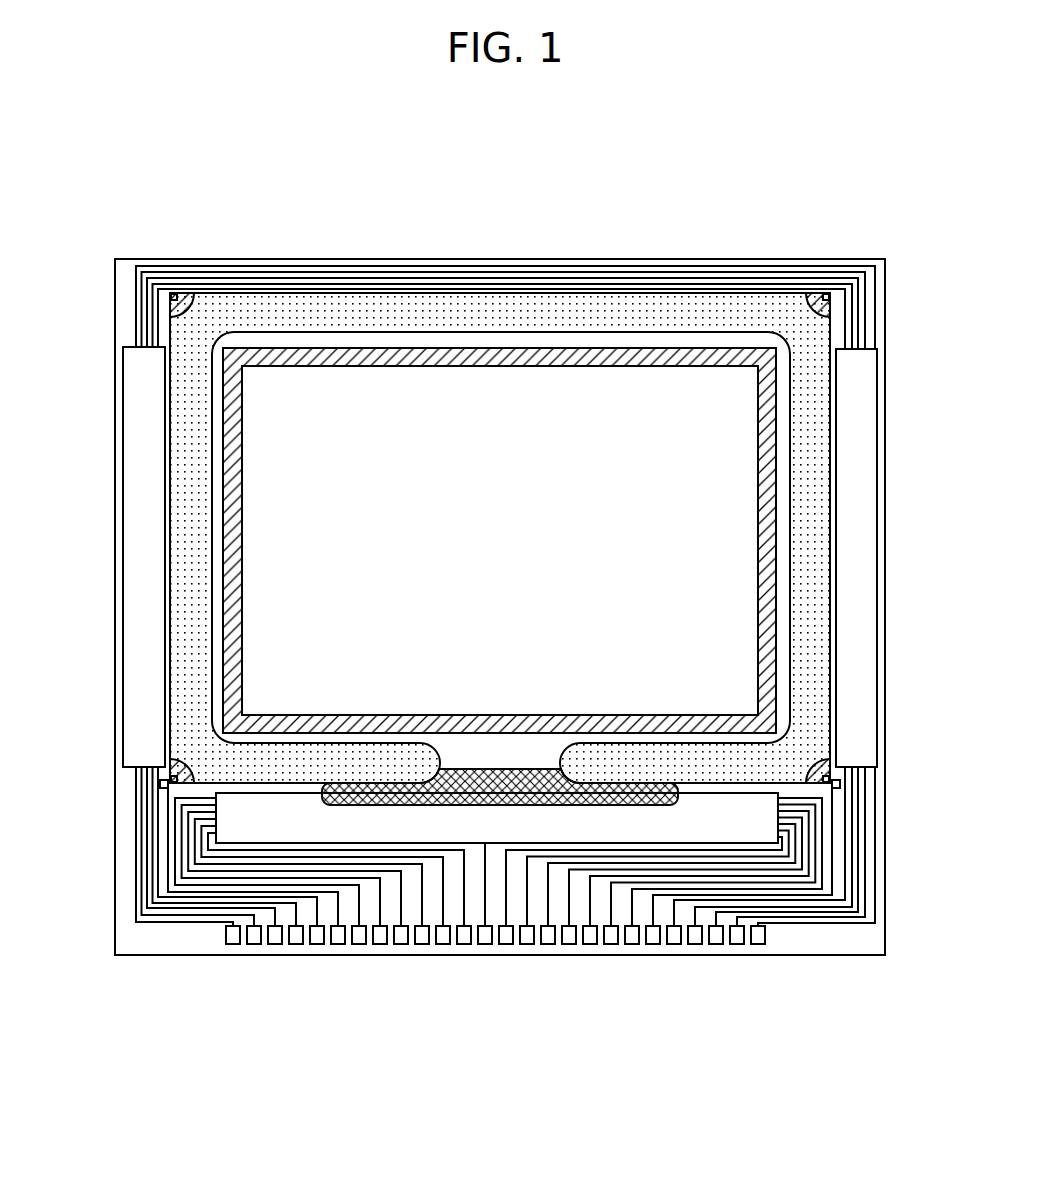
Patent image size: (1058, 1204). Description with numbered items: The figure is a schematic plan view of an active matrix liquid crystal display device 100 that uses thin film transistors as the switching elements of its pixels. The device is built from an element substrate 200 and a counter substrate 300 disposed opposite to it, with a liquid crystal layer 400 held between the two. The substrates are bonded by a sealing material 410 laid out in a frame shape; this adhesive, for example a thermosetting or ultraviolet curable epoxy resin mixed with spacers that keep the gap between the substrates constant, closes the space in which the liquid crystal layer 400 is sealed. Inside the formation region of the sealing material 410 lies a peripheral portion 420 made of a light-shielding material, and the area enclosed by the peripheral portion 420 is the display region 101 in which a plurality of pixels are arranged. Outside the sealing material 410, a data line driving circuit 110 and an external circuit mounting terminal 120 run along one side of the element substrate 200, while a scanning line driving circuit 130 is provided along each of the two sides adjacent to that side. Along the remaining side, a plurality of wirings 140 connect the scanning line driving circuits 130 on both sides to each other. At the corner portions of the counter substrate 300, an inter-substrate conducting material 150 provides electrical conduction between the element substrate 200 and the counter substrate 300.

The liquid crystal display device 100 is at (610, 192).
The display region 101 is at (657, 563).
The data line driving circuit 110 is at (497, 820).
The external circuit mounting terminal 120 is at (402, 932).
The scanning line driving circuit 130 is at (137, 627).
The wirings 140 is at (300, 262).
The inter-substrate conducting material 150 is at (177, 293).
The element substrate 200 is at (432, 265).
The counter substrate 300 is at (542, 305).
The liquid crystal layer 400 is at (613, 406).
The sealing material 410 is at (822, 470).
The peripheral portion 420 is at (767, 482).